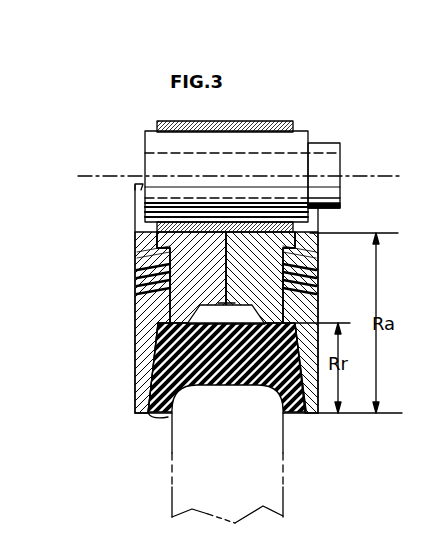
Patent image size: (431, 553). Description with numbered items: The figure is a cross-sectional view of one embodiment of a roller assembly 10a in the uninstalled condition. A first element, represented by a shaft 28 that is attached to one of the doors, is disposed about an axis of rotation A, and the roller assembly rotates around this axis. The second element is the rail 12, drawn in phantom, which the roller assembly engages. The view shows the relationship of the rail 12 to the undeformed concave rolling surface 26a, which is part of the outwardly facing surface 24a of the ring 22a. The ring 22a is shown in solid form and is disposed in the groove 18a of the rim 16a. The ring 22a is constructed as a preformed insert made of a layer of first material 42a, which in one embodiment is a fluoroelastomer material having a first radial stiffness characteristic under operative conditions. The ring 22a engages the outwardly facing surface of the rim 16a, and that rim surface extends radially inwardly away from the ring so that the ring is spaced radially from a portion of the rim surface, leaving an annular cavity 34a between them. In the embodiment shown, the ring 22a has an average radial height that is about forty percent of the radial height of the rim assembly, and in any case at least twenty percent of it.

The roller assembly 10a is at (121, 231).
The axis of rotation A is at (100, 176).
The shaft 28 is at (340, 150).
The rim 16a is at (133, 358).
The groove 18a is at (176, 326).
The annular cavity 34a is at (227, 316).
The concave rolling surface 26a is at (220, 385).
The layer of first material 42a is at (157, 381).
The outwardly facing surface 24a is at (162, 413).
The ring 22a is at (291, 420).
The rail 12 is at (172, 487).